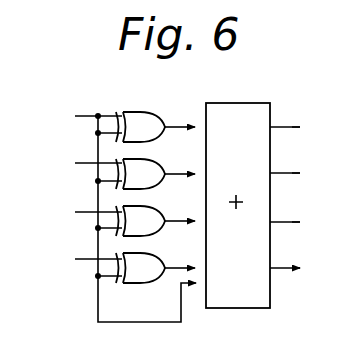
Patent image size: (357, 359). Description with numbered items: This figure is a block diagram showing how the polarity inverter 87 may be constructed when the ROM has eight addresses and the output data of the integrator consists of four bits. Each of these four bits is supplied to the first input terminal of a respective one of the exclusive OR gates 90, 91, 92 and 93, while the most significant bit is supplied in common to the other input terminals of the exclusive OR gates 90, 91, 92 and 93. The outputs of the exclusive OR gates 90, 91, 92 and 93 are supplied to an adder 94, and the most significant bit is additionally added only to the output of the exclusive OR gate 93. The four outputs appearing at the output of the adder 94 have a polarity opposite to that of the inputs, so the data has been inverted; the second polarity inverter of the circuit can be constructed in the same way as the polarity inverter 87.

The polarity inverter 87 is at (146, 96).
The exclusive OR gate 90 is at (142, 141).
The exclusive OR gate 91 is at (142, 188).
The exclusive OR gate 92 is at (142, 234).
The exclusive OR gate 93 is at (140, 282).
The adder 94 is at (243, 309).